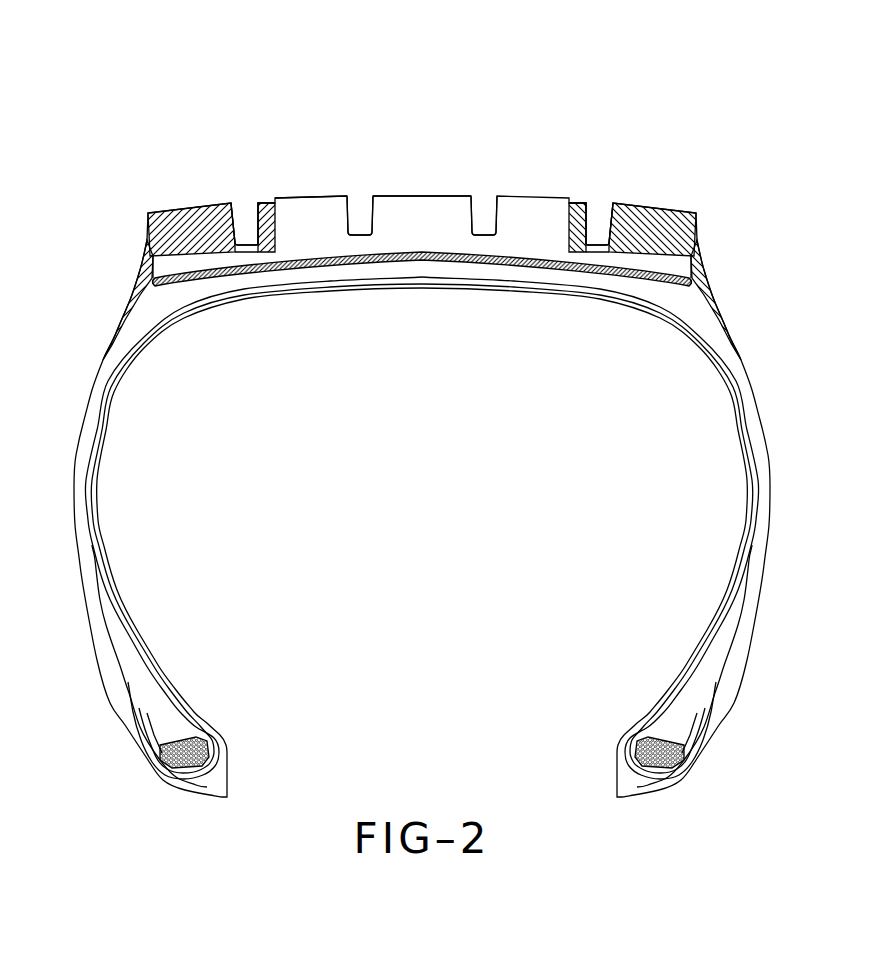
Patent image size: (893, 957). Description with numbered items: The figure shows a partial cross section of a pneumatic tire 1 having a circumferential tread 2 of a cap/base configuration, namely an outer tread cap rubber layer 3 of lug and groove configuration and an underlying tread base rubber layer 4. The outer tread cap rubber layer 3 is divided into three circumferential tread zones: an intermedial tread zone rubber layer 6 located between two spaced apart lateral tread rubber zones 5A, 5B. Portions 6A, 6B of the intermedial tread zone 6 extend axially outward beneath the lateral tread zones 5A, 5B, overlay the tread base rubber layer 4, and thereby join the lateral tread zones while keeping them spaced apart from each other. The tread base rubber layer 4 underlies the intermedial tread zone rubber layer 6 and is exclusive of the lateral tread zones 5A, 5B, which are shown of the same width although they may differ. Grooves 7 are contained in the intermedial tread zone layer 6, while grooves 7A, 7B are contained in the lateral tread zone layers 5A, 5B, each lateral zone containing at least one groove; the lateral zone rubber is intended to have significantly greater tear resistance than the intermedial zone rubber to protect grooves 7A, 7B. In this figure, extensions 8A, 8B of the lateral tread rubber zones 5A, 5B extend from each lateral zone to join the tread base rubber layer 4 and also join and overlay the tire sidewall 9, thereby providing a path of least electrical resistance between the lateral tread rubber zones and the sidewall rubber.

The pneumatic tire partial cross section 1 is at (128, 118).
The tread 2 is at (410, 186).
The outer tread cap rubber layer 3 is at (300, 196).
The tread base rubber layer 4 is at (463, 256).
The lateral tread rubber zone 5A is at (182, 217).
The lateral tread rubber zone 5B is at (662, 222).
The intermedial tread zone rubber layer 6 is at (427, 208).
The portion of intermedial tread zone 6A is at (181, 268).
The portion of intermedial tread zone 6B is at (663, 268).
The grooves 7 is at (350, 210).
The groove 7A is at (237, 222).
The groove 7B is at (601, 220).
The extension of lateral tread rubber zone 8A is at (135, 315).
The extension of lateral tread rubber zone 8B is at (708, 315).
The tire sidewall 9 is at (95, 413).